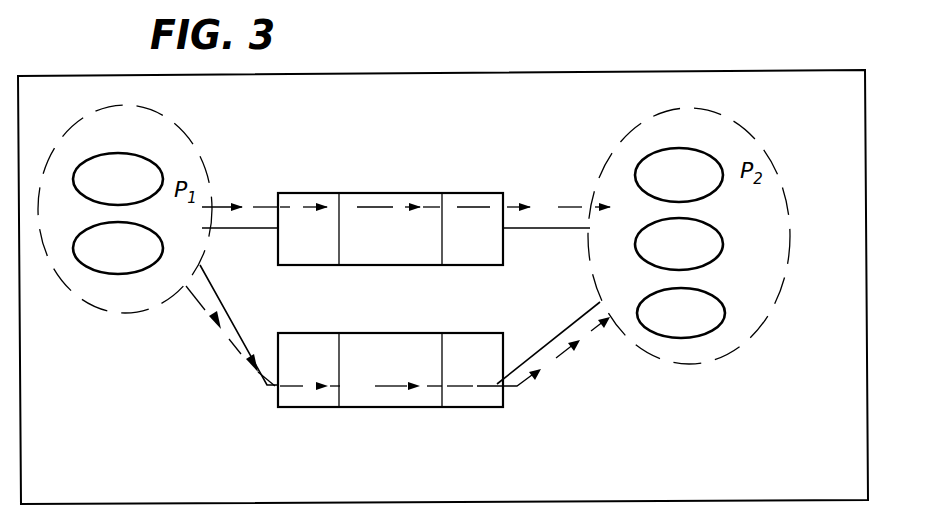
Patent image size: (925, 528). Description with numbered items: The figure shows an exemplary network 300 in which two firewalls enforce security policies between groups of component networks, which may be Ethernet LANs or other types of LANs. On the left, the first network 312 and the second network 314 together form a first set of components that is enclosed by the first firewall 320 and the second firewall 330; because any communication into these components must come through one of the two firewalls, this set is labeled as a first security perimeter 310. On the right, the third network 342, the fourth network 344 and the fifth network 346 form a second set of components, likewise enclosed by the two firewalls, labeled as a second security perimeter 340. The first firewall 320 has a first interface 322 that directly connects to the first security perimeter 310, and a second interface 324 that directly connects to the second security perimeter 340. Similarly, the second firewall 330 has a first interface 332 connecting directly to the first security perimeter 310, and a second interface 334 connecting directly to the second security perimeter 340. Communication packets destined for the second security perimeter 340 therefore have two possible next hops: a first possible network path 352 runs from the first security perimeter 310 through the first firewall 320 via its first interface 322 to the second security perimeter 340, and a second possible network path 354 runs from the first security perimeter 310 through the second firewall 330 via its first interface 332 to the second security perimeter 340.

The network 300 is at (702, 478).
The first security perimeter 310 is at (151, 141).
The first network 312 is at (152, 159).
The second network 314 is at (143, 272).
The first firewall 320 is at (398, 170).
The first interface 322 is at (298, 201).
The second interface 324 is at (467, 202).
The second firewall 330 is at (398, 418).
The first interface 332 is at (305, 398).
The second interface 334 is at (470, 398).
The second security perimeter 340 is at (713, 141).
The third network 342 is at (718, 160).
The fourth network 344 is at (723, 245).
The fifth network 346 is at (725, 310).
The first possible network path 352 is at (540, 206).
The second possible network path 354 is at (556, 358).